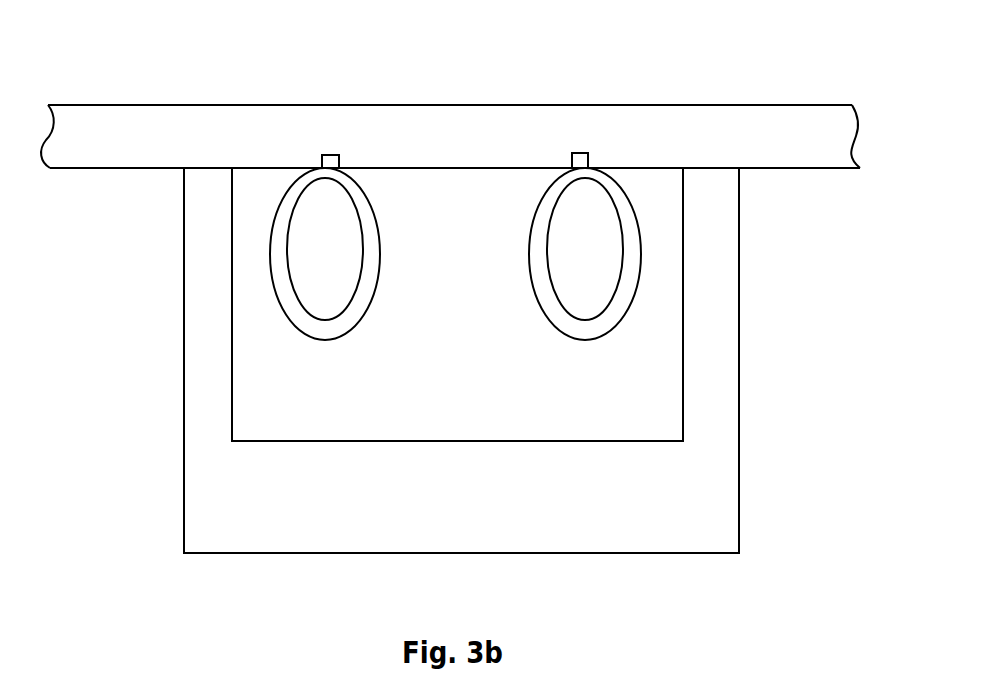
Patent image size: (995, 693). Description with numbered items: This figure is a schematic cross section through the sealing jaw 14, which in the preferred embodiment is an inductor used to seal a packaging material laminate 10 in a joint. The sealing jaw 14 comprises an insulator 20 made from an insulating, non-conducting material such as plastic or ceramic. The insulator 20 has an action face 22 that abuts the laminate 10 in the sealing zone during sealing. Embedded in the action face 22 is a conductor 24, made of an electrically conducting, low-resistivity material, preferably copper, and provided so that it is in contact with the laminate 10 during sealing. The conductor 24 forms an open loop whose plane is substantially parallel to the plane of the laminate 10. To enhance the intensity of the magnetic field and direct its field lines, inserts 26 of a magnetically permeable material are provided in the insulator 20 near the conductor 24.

The first packaging material laminate 10 is at (177, 142).
The sealing jaw 14 is at (280, 553).
The insulator 20 is at (722, 370).
The action face 22 is at (473, 166).
The conductor 24 is at (280, 278).
The inserts 26 is at (533, 400).